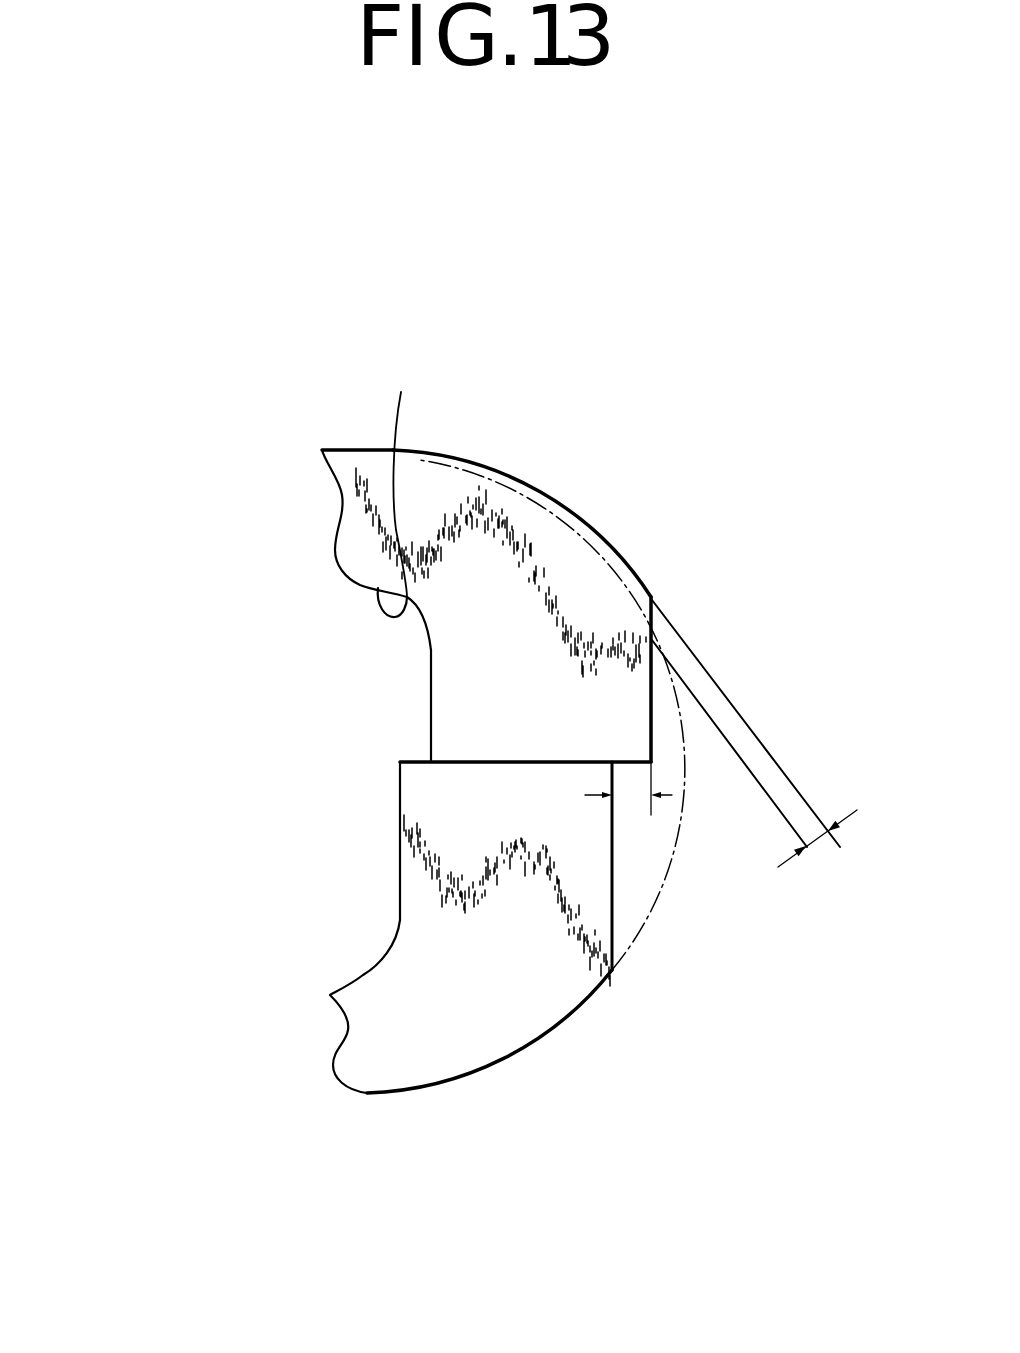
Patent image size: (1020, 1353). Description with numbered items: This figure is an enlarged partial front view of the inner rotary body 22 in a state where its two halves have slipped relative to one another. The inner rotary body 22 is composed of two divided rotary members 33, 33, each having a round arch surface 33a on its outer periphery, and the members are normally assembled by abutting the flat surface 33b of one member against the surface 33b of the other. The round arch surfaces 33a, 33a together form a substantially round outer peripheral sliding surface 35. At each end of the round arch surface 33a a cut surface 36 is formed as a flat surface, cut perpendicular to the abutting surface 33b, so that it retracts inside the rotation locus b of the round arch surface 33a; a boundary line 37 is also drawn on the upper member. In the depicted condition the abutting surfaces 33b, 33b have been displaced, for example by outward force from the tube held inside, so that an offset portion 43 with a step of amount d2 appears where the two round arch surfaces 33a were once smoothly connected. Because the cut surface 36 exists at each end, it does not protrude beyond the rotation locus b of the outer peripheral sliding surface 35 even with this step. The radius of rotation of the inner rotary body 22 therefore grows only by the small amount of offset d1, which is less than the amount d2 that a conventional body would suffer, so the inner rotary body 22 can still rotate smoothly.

The inner rotary body 22 is at (150, 562).
The divided rotary member 33 is at (577, 580).
The round arch surface 33a is at (540, 490).
The abutting surface 33b is at (517, 760).
The outer peripheral sliding surface 35 is at (500, 1070).
The cut surface 36 is at (653, 687).
The boundary line 37 is at (403, 466).
The offset portion 43 is at (617, 740).
The rotation locus b is at (658, 897).
The amount of offset d1 is at (822, 855).
The amount of step d2 is at (628, 815).